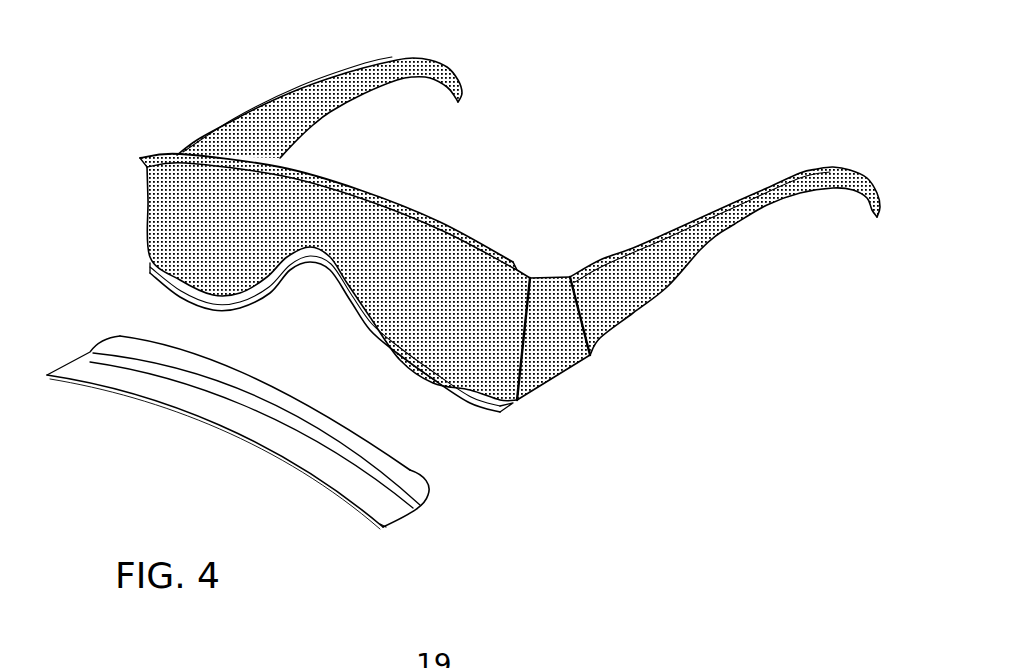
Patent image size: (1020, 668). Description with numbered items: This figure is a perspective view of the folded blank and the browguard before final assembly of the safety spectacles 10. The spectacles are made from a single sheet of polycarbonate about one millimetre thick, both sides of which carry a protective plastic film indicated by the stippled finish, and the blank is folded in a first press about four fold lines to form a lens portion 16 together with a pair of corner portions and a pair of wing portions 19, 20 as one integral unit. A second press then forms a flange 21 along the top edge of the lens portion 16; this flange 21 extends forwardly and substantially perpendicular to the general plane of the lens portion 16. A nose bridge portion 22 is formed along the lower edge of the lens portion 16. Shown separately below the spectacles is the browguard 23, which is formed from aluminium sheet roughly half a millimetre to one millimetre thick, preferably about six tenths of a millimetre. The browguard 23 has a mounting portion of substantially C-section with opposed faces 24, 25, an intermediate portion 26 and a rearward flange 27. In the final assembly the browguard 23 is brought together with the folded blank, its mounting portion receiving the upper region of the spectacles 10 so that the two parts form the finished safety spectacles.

The safety spectacles 10 is at (588, 130).
The lens portion 16 is at (480, 361).
The wing portion 19 is at (462, 75).
The wing portion 20 is at (669, 271).
The flange 21 is at (406, 209).
The nose bridge portion 22 is at (361, 336).
The browguard 23 is at (457, 543).
The face 24 is at (225, 404).
The face 25 is at (383, 531).
The intermediate portion 26 is at (424, 507).
The rearward flange 27 is at (415, 469).